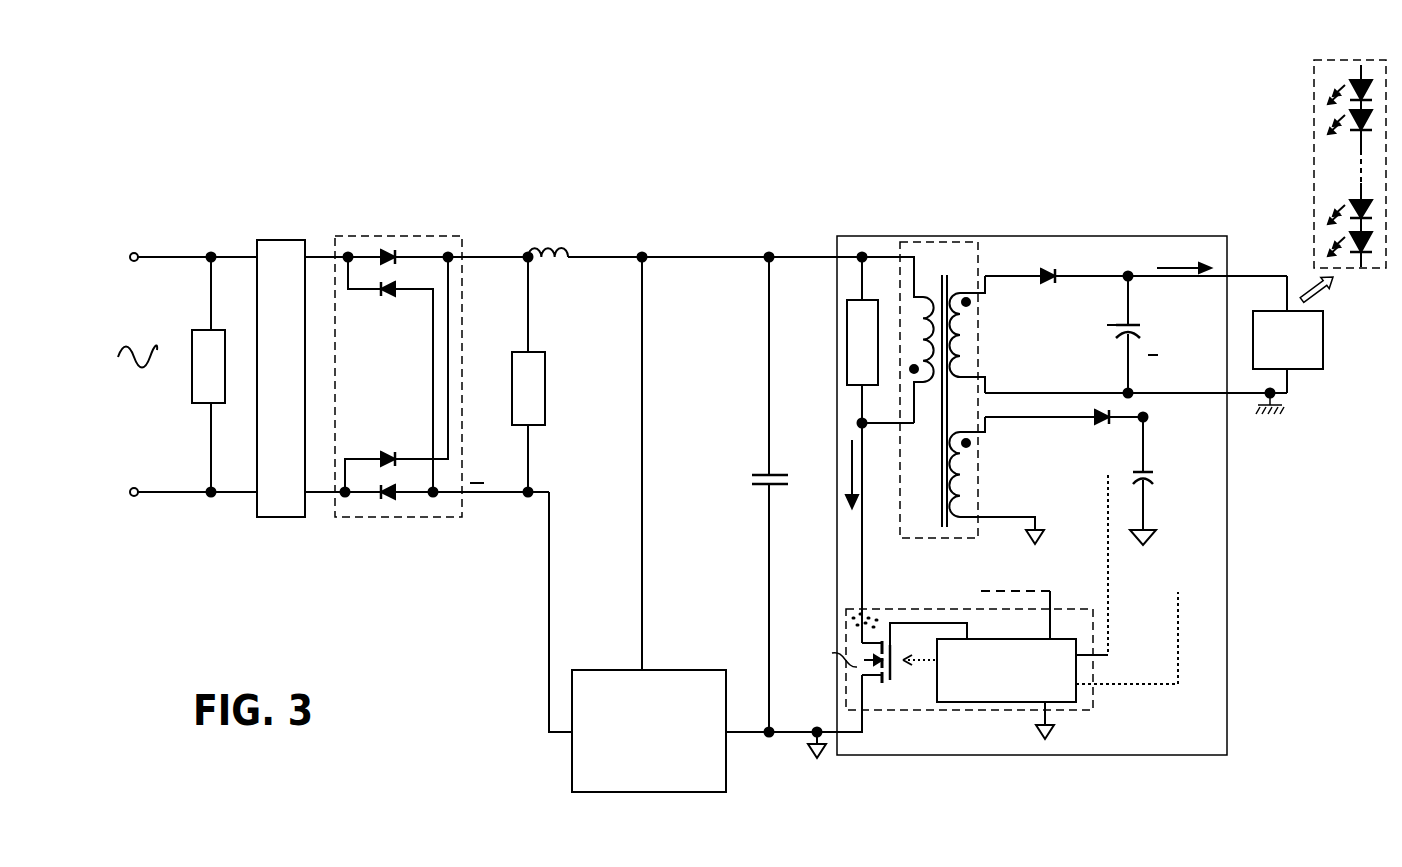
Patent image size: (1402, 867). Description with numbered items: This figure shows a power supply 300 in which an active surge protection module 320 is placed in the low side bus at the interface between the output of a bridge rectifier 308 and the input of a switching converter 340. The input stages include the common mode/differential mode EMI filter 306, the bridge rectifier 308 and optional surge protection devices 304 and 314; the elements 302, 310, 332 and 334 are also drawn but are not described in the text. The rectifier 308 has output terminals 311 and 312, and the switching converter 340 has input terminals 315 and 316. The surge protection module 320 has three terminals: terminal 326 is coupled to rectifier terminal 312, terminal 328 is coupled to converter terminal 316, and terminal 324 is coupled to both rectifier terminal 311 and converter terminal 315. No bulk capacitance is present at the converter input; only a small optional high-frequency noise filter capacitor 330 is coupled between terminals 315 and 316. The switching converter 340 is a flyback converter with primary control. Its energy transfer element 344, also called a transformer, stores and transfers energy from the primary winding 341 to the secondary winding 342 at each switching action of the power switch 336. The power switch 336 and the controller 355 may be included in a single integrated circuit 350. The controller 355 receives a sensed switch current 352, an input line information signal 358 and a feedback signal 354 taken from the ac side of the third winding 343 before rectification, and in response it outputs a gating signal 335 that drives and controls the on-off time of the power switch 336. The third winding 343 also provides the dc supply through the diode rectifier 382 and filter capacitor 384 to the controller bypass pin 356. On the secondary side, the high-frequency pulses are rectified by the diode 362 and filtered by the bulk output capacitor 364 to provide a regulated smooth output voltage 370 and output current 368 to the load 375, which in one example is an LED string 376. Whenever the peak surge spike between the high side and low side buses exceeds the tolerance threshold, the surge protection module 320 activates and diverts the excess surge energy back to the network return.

The power supply 300 is at (248, 48).
The AC input source 302 is at (142, 400).
The SPD 304 is at (192, 317).
The common mode/differential mode EMI filter 306 is at (280, 237).
The bridge rectifier 308 is at (362, 218).
The inductor 310 is at (497, 275).
The output terminal of rectifier 311 is at (478, 250).
The output terminal of rectifier 312 is at (472, 497).
The SPD 314 is at (575, 363).
The input terminal of switching converter 315 is at (796, 253).
The input terminal of switching converter 316 is at (797, 737).
The active surge protection module 320 is at (603, 798).
The terminal C1 324 is at (647, 643).
The terminal A1 326 is at (542, 720).
The terminal B1 328 is at (737, 737).
The capacitor CF 330 is at (750, 470).
The power converter 332 is at (838, 340).
The switch current 334 is at (846, 478).
The gating signal 335 is at (900, 676).
The power switch S1 336 is at (843, 641).
The switching converter 340 is at (1093, 234).
The primary winding 341 is at (908, 310).
The secondary winding 342 is at (967, 360).
The third winding 343 is at (970, 457).
The energy transfer element T1 344 is at (945, 265).
The integrated circuit 350 is at (927, 710).
The sensed switch current 352 is at (872, 612).
The feedback signal 354 is at (1097, 655).
The controller 355 is at (965, 702).
The bypass pin BP 356 is at (1190, 435).
The input line information signal 358 is at (1025, 588).
The diode D1 362 is at (1060, 260).
The bulk output capacitor Co 364 is at (1098, 342).
The output current Io 368 is at (1195, 258).
The output voltage Vo 370 is at (1292, 253).
The load 375 is at (1317, 377).
The LED string 376 is at (1307, 122).
The diode rectifier 382 is at (1093, 430).
The filter capacitor C1 384 is at (1155, 487).